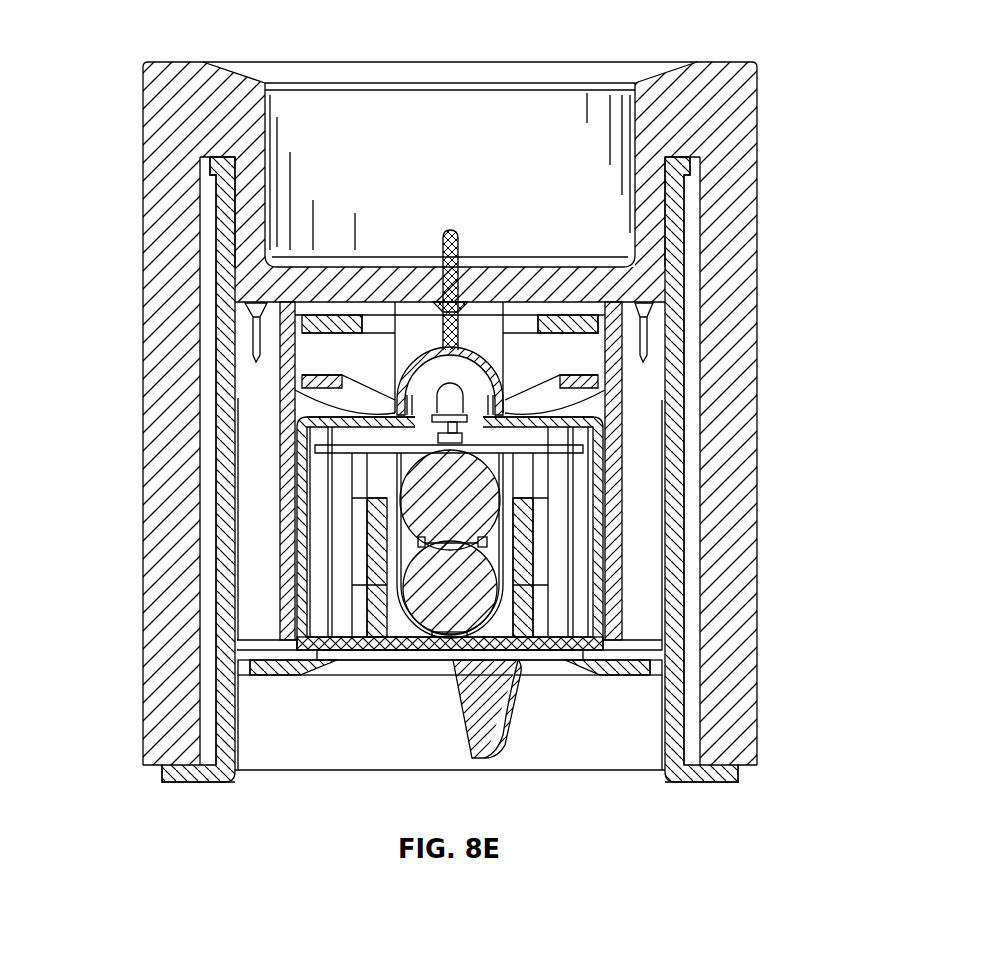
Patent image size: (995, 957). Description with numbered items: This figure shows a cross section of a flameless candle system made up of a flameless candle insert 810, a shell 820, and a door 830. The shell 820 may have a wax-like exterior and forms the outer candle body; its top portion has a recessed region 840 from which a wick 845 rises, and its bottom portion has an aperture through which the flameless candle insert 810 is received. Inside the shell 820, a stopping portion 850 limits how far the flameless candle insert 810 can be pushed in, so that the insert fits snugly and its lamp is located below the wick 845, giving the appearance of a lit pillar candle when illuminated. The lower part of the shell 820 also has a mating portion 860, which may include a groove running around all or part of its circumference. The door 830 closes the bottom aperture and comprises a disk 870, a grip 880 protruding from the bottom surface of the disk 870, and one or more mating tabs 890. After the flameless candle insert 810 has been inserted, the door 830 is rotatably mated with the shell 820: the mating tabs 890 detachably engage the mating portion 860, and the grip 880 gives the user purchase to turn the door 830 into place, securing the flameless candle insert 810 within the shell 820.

The flameless candle insert 810 is at (428, 482).
The shell 820 is at (742, 59).
The door 830 is at (378, 692).
The recessed region 840 is at (510, 110).
The wick 845 is at (455, 238).
The stopping portion 850 is at (307, 382).
The mating portion 860 is at (617, 593).
The disk 870 is at (627, 670).
The grip 880 is at (460, 723).
The mating tab 890 is at (247, 672).